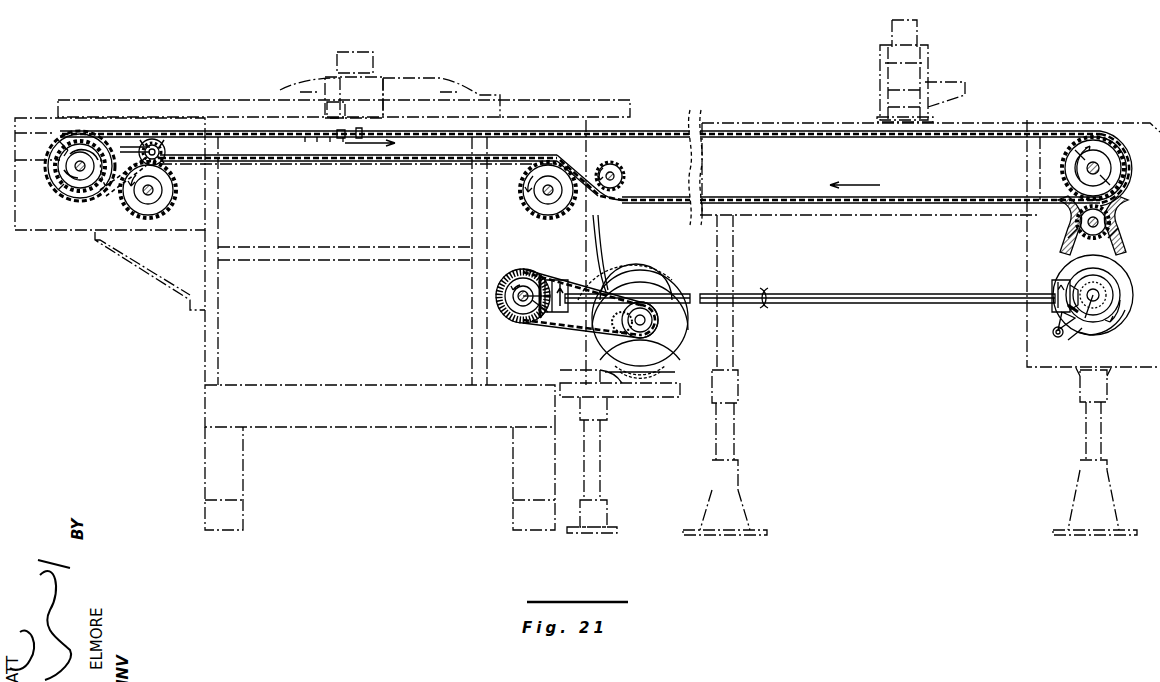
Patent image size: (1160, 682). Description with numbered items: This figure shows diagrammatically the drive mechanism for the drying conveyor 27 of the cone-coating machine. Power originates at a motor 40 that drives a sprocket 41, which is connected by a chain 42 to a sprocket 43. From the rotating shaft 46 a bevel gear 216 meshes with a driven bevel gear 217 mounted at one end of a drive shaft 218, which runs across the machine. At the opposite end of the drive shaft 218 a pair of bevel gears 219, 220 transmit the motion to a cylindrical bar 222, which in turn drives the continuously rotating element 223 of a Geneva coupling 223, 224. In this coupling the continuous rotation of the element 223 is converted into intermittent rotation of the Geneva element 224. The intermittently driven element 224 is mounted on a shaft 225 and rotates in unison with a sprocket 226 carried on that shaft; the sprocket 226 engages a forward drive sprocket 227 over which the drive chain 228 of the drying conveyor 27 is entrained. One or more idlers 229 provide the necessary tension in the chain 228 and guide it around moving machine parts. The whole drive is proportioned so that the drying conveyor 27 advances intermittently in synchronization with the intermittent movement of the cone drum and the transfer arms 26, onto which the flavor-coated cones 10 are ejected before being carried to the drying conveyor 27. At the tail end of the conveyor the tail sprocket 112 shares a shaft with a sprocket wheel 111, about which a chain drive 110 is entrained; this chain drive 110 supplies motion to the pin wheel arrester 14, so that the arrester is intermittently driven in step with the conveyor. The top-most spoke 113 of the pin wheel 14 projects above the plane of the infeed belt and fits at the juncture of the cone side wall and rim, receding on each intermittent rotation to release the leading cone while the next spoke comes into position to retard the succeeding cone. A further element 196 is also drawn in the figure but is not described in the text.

The ice cream cones 10 is at (348, 140).
The pin wheel arrester 14 is at (158, 148).
The transfer arm 26 is at (112, 100).
The drying conveyor 27 is at (291, 174).
The motor 40 is at (672, 328).
The sprocket 41 is at (655, 335).
The chain 42 is at (566, 328).
The sprocket 43 is at (512, 275).
The rotating shaft 46 is at (518, 304).
The chain drive 110 is at (120, 148).
The sprocket wheel 111 is at (66, 190).
The tail sprocket 112 is at (76, 200).
The top-most spoke 113 is at (152, 140).
The mechanism 196 is at (370, 76).
The bevel gear 216 is at (505, 294).
The driven bevel gear 217 is at (550, 278).
The drive shaft 218 is at (652, 292).
The bevel gear 219 is at (1056, 302).
The bevel gear 220 is at (1120, 294).
The cylindrical bar 222 is at (1098, 290).
The continuously rotating element 223 is at (1112, 332).
The Geneva element 224 is at (1126, 232).
The shaft 225 is at (1085, 230).
The sprocket 226 is at (1077, 219).
The forward drive sprocket 227 is at (1065, 169).
The drive chain 228 is at (408, 131).
The idlers 229 is at (146, 215).